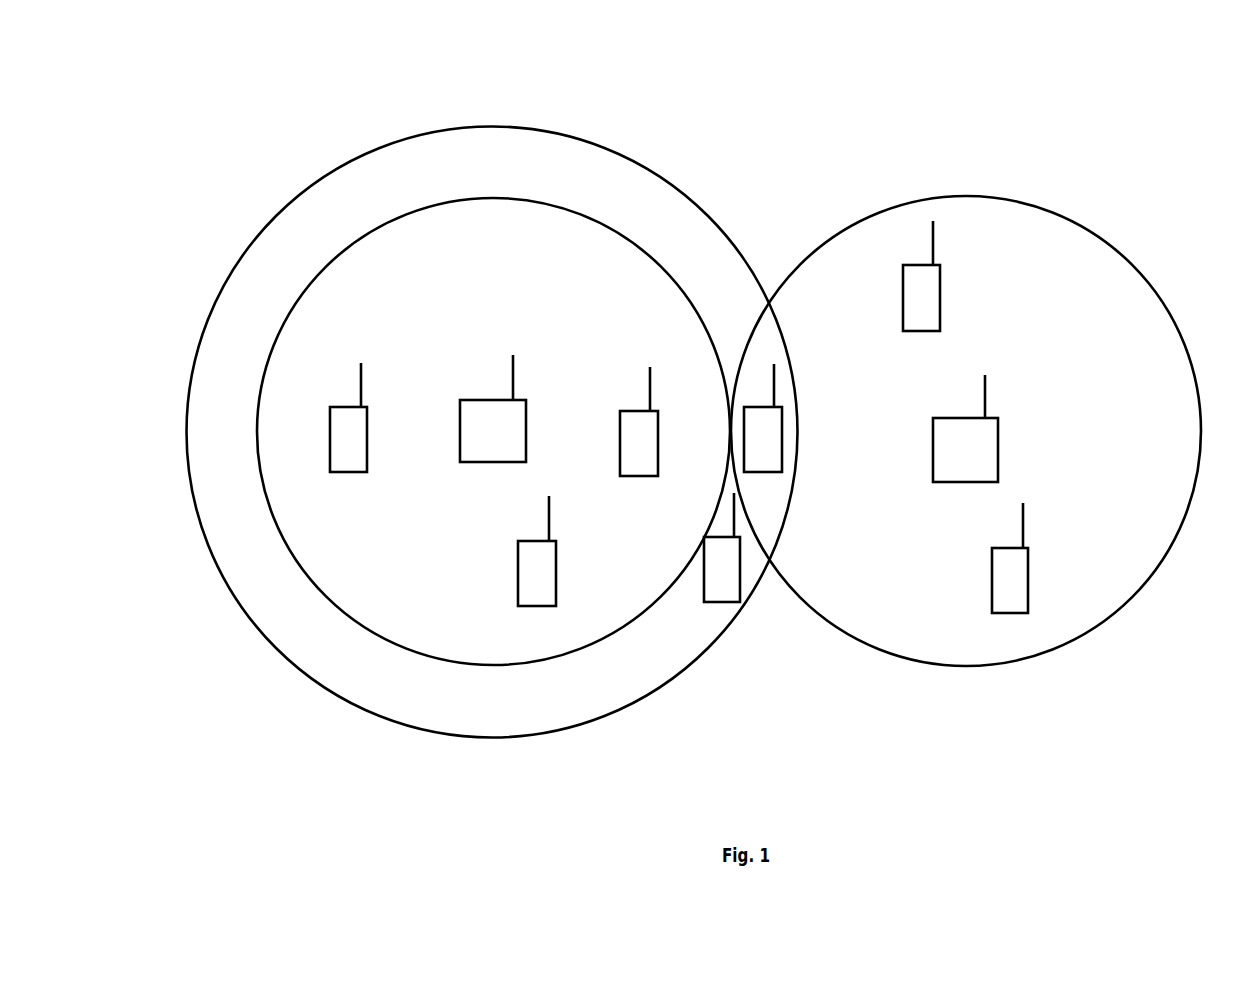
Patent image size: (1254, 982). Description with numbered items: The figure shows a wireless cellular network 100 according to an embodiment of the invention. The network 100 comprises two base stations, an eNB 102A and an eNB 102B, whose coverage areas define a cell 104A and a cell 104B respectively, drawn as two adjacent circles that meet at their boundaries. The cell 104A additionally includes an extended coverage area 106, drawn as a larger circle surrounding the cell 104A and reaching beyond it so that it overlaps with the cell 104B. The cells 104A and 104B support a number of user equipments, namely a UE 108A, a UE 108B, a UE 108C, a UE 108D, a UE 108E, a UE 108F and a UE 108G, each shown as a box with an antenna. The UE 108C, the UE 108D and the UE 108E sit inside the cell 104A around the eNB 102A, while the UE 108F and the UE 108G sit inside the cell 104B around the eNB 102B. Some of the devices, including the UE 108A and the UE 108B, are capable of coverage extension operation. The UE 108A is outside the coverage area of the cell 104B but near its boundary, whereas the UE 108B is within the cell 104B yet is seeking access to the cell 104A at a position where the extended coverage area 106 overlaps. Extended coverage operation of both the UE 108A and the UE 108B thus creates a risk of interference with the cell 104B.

The wireless network 100 is at (255, 107).
The extended coverage area 106 is at (494, 126).
The cell 104A is at (499, 198).
The cell 104B is at (975, 196).
The eNB 102A is at (497, 400).
The eNB 102B is at (970, 418).
The UE 108A is at (713, 604).
The UE 108B is at (763, 474).
The UE 108C is at (348, 407).
The UE 108D is at (536, 541).
The UE 108E is at (636, 411).
The UE 108F is at (920, 265).
The UE 108G is at (1010, 548).